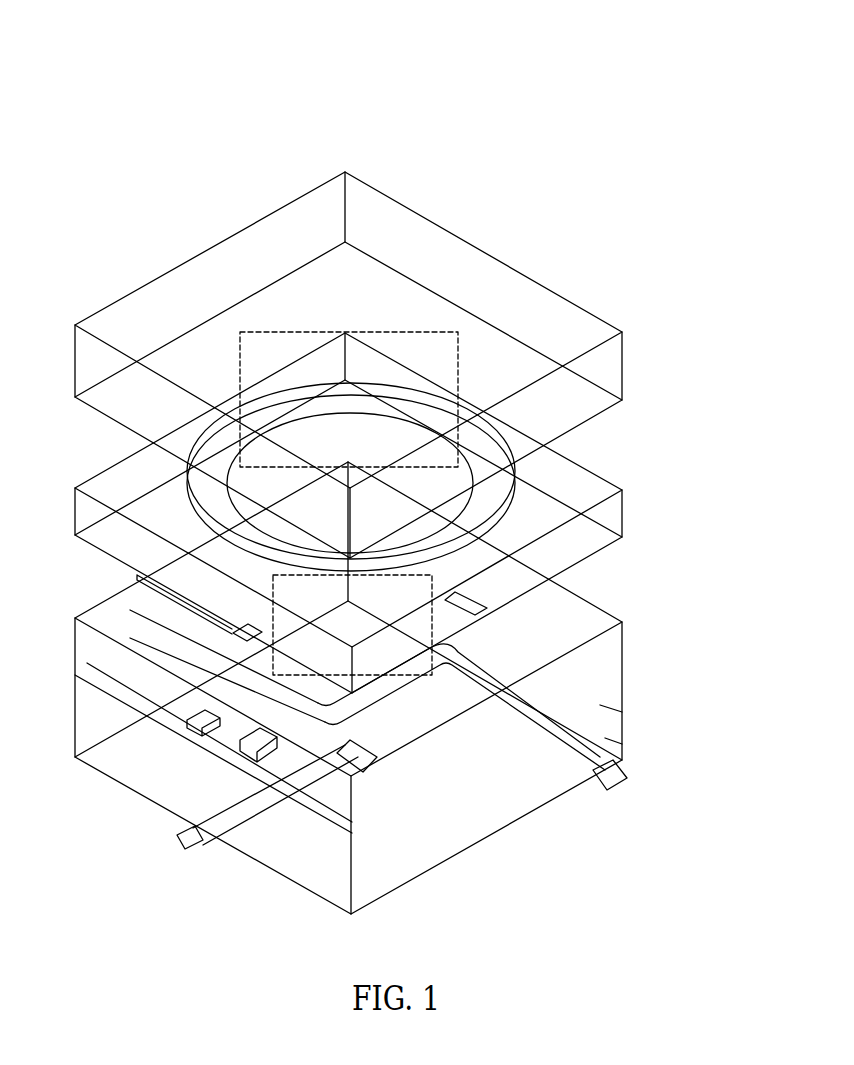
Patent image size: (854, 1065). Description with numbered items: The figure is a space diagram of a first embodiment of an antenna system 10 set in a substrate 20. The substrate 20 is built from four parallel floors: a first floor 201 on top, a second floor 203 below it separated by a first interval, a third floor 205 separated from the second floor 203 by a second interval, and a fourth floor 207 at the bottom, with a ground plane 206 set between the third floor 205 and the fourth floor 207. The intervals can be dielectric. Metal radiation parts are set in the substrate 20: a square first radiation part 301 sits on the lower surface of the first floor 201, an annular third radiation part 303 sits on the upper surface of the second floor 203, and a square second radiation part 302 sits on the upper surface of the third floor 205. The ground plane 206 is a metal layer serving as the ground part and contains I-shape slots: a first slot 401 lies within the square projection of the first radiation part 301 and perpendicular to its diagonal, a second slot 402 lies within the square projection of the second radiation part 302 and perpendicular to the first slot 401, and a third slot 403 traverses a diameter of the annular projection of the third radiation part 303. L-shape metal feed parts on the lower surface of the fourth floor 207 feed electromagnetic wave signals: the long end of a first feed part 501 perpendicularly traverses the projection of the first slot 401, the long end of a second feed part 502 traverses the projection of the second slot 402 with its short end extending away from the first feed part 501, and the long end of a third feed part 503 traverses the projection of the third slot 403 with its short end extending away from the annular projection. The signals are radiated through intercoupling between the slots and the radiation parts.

The antenna system 10 is at (298, 64).
The substrate 20 is at (737, 338).
The first floor 201 is at (605, 365).
The second floor 203 is at (606, 507).
The third floor 205 is at (608, 646).
The ground plane 206 is at (622, 712).
The fourth floor 207 is at (622, 744).
The first radiation part 301 is at (287, 387).
The second radiation part 302 is at (407, 673).
The third radiation part 303 is at (197, 498).
The first slot 401 is at (135, 577).
The second slot 402 is at (193, 723).
The third slot 403 is at (430, 579).
The first feed part 501 is at (147, 614).
The second feed part 502 is at (180, 837).
The third feed part 503 is at (617, 787).